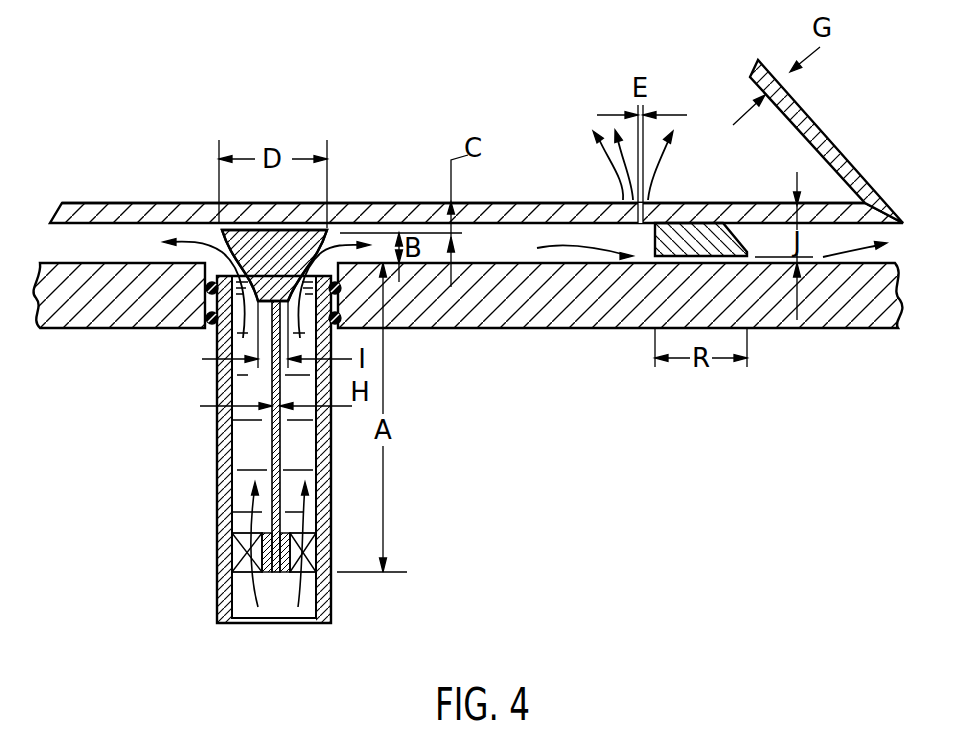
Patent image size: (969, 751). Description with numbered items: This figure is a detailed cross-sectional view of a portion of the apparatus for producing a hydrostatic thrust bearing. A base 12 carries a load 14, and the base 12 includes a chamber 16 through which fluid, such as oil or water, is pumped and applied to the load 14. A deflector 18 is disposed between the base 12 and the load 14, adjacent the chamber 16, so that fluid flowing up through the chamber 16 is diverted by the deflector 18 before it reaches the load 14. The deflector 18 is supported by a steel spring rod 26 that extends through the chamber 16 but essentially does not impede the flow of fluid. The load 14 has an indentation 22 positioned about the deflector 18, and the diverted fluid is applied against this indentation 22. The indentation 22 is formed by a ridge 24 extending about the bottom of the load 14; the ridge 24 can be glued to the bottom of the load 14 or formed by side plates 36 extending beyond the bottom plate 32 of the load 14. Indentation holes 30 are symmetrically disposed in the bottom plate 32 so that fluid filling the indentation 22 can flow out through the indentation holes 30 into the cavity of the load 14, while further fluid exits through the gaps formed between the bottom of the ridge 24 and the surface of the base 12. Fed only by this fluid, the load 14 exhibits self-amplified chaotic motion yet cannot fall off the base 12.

The base 12 is at (847, 308).
The load 14 is at (860, 168).
The chamber 16 is at (222, 424).
The deflector 18 is at (242, 318).
The indentation 22 is at (510, 234).
The ridge 24 is at (698, 233).
The steel spring rod 26 is at (270, 463).
The indentation holes 30 is at (612, 208).
The bottom plate 32 is at (344, 203).
The side plates 36 is at (820, 133).